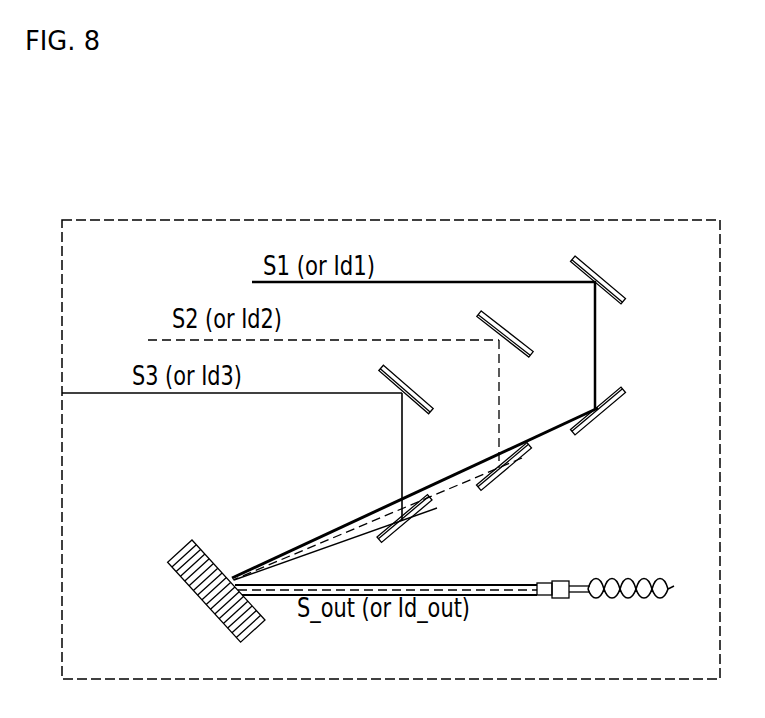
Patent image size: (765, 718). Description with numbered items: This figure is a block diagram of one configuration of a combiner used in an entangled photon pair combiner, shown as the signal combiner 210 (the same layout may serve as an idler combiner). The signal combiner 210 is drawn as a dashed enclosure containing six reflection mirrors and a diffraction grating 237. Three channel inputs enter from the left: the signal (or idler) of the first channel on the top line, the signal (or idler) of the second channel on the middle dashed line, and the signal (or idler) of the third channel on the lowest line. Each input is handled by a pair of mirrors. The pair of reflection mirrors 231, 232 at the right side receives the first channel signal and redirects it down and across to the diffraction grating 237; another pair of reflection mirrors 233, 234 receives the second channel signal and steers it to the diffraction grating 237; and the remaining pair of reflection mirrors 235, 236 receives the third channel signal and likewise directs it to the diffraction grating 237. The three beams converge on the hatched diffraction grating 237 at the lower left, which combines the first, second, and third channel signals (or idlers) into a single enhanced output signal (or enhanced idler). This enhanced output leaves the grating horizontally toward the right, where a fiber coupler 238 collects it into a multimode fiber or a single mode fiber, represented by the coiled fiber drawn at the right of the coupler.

The signal combiner 210 is at (372, 220).
The reflection mirror 231 is at (618, 283).
The reflection mirror 232 is at (625, 397).
The reflection mirror 233 is at (530, 357).
The reflection mirror 234 is at (523, 462).
The reflection mirror 235 is at (428, 412).
The reflection mirror 236 is at (430, 508).
The diffraction grating 237 is at (172, 557).
The fiber coupler 238 is at (563, 597).